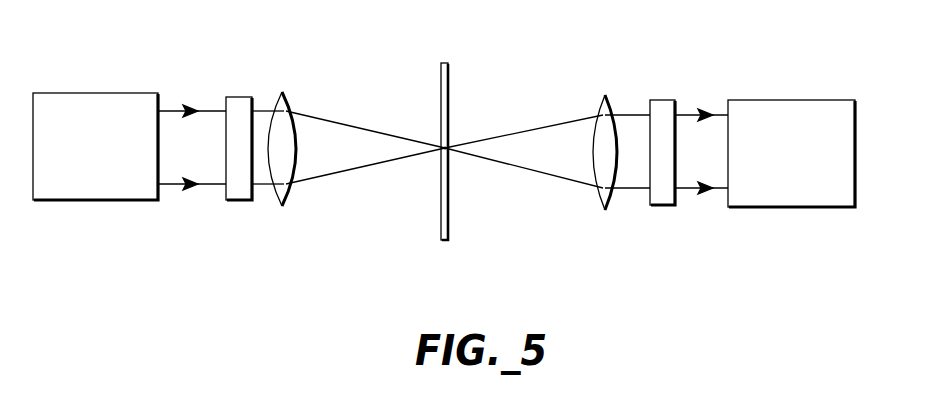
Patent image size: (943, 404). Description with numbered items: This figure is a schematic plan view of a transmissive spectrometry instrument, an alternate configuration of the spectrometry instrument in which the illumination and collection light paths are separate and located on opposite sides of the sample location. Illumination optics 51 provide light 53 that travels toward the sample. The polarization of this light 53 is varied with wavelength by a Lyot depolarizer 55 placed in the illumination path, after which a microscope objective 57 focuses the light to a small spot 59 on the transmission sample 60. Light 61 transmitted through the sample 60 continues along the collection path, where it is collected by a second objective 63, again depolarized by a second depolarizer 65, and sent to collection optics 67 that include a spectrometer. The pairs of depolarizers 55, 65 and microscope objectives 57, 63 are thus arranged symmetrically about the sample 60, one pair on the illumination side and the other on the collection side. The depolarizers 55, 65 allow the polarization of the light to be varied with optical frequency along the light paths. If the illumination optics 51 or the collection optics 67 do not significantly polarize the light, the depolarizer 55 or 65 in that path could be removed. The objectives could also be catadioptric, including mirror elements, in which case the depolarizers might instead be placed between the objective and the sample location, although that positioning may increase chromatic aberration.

The illumination optics 51 is at (69, 93).
The light 53 is at (168, 107).
The Lyot depolarizer 55 is at (238, 205).
The microscope objective 57 is at (292, 194).
The spot 59 is at (449, 151).
The sample 60 is at (440, 82).
The light 61 is at (510, 137).
The objective 63 is at (597, 199).
The depolarizer 65 is at (657, 205).
The collection optics 67 is at (752, 100).